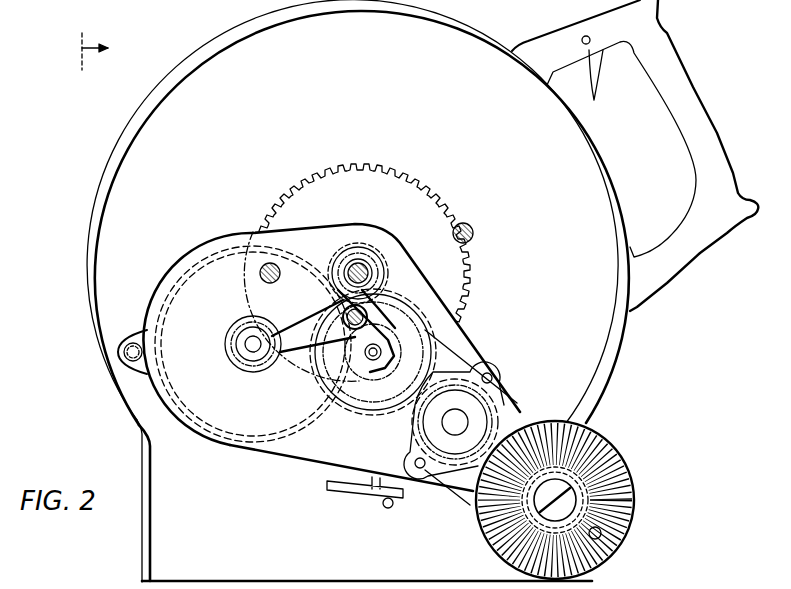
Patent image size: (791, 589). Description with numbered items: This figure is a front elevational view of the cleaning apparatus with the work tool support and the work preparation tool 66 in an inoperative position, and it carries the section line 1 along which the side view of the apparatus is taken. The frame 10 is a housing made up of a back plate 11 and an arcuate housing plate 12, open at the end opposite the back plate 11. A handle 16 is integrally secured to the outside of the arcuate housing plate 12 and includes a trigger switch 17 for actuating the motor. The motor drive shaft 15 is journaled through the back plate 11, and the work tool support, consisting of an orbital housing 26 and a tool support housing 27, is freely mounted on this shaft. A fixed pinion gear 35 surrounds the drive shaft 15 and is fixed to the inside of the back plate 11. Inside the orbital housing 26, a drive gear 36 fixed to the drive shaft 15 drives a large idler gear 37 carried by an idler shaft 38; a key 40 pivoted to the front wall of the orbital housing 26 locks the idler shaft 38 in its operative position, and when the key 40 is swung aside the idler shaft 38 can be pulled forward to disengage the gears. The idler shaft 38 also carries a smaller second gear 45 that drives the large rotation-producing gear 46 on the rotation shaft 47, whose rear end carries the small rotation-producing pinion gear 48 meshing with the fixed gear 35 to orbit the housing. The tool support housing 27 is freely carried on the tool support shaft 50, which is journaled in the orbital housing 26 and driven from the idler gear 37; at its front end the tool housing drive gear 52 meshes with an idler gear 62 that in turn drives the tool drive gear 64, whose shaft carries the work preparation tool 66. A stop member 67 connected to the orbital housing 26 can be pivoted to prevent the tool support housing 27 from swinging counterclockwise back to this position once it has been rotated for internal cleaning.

The section line 1— 1 is at (87, 54).
The frame 10 is at (113, 152).
The back plate 11 is at (160, 128).
The arcuate housing plate 12 is at (490, 20).
The drive shaft 15 is at (347, 260).
The handle 16 is at (681, 68).
The trigger switch 17 is at (600, 63).
The orbital housing 26 is at (267, 450).
The tool support housing 27 is at (522, 418).
The fixed pinion gear 35 is at (443, 223).
The drive gear 36 is at (382, 252).
The large idler gear 37 is at (363, 425).
The idler shaft 38 is at (373, 362).
The key 40 is at (300, 328).
The second gear 45 is at (352, 404).
The rotation-producing gear 46 is at (177, 277).
The rotation shaft 47 is at (253, 360).
The rotation-producing pinion gear 48 is at (233, 343).
The tool support shaft 50 is at (458, 420).
The tool housing drive gear 52 is at (413, 440).
The idler gear 62 is at (472, 487).
The tool drive gear 64 is at (612, 452).
The work preparation tool 66 is at (636, 500).
The stop member 67 is at (353, 492).